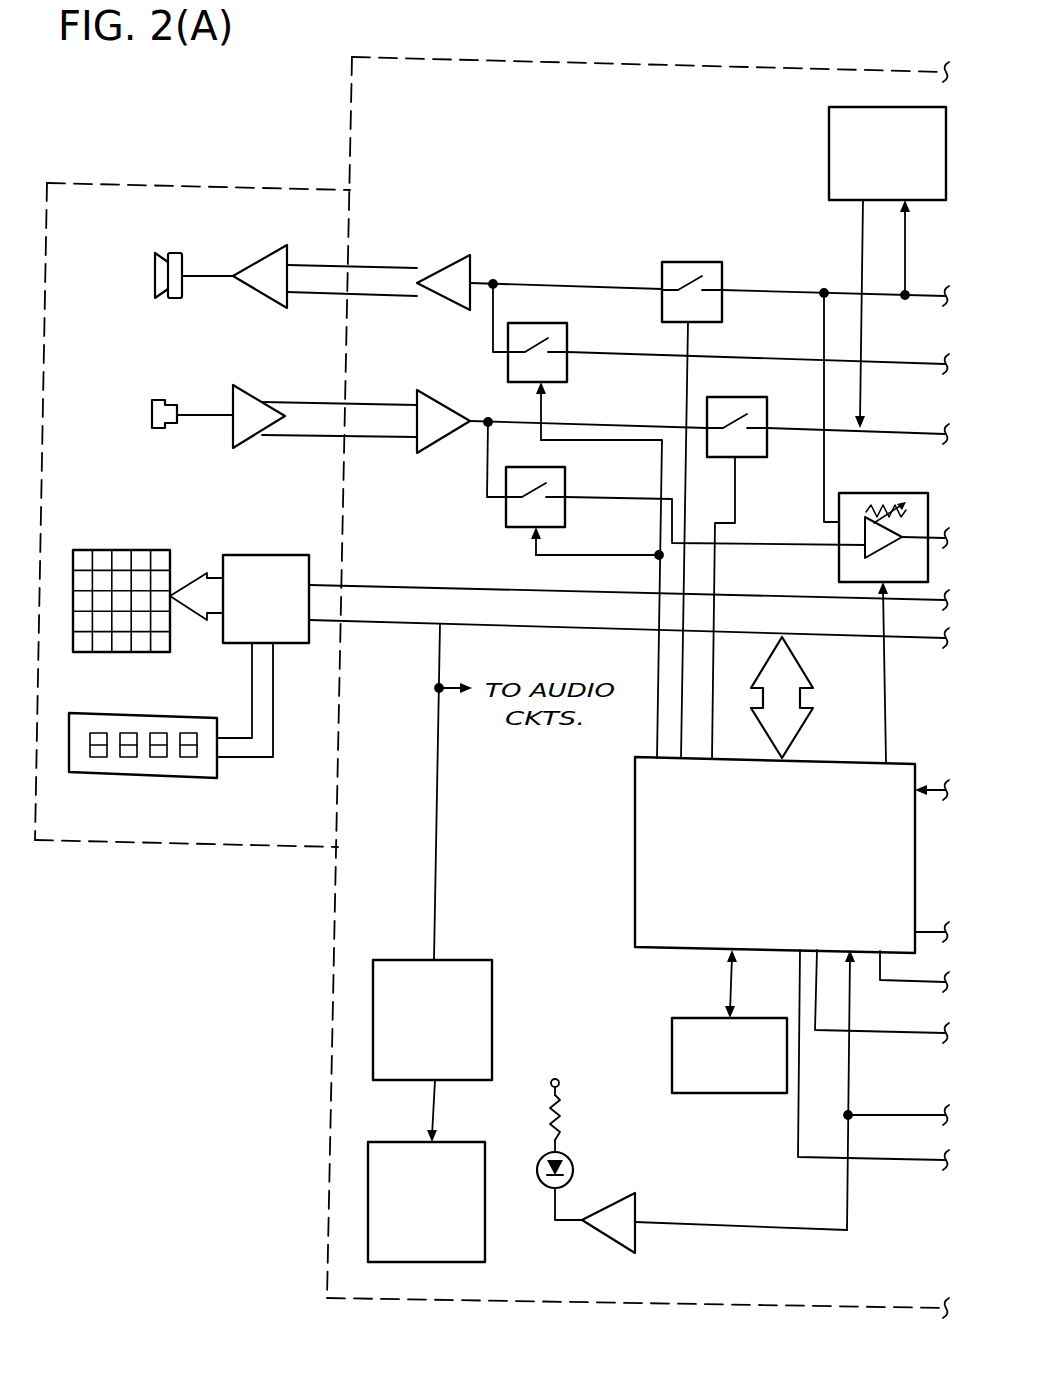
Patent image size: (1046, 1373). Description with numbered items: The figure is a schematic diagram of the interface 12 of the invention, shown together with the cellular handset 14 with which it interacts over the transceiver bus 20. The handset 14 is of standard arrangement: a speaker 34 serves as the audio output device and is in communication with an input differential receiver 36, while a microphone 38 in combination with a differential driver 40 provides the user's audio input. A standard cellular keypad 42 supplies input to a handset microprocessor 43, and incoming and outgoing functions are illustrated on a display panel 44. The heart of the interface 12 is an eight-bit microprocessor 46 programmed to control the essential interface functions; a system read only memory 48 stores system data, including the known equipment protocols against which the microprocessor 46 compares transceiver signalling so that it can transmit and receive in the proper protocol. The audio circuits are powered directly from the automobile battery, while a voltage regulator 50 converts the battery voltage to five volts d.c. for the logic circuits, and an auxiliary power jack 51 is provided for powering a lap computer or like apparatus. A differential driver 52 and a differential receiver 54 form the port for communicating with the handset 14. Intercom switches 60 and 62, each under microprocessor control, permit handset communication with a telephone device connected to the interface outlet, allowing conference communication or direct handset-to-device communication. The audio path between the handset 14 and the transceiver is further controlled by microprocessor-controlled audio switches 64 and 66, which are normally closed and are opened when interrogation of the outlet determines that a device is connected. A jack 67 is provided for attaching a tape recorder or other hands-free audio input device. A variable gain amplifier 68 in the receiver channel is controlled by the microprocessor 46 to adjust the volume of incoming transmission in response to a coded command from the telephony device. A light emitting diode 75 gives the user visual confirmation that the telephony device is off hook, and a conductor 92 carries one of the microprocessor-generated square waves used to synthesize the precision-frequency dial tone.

The interface 12 is at (320, 1133).
The cellular handset 14 is at (195, 180).
The transceiver bus 20 is at (382, 583).
The speaker 34 is at (172, 258).
The input differential receiver 36 is at (258, 258).
The microphone 38 is at (158, 399).
The differential driver 40 is at (244, 384).
The cellular keypad 42 is at (140, 550).
The handset microprocessor 43 is at (269, 554).
The display panel 44 is at (217, 774).
The microprocessor 46 is at (635, 818).
The system read only memory (ROM) 48 is at (716, 1094).
The voltage regulator 50 is at (492, 1017).
The auxiliary power jack 51 is at (398, 1142).
The differential driver 52 is at (463, 252).
The differential receiver 54 is at (418, 389).
The intercom switch 60 is at (508, 362).
The intercom switch 62 is at (506, 514).
The audio switch 64 is at (712, 262).
The audio switch 66 is at (734, 397).
The jack 67 is at (829, 161).
The variable gain amplifier 68 is at (839, 535).
The light emitting diode (LED) 75 is at (573, 1167).
The conductor 92 is at (900, 981).